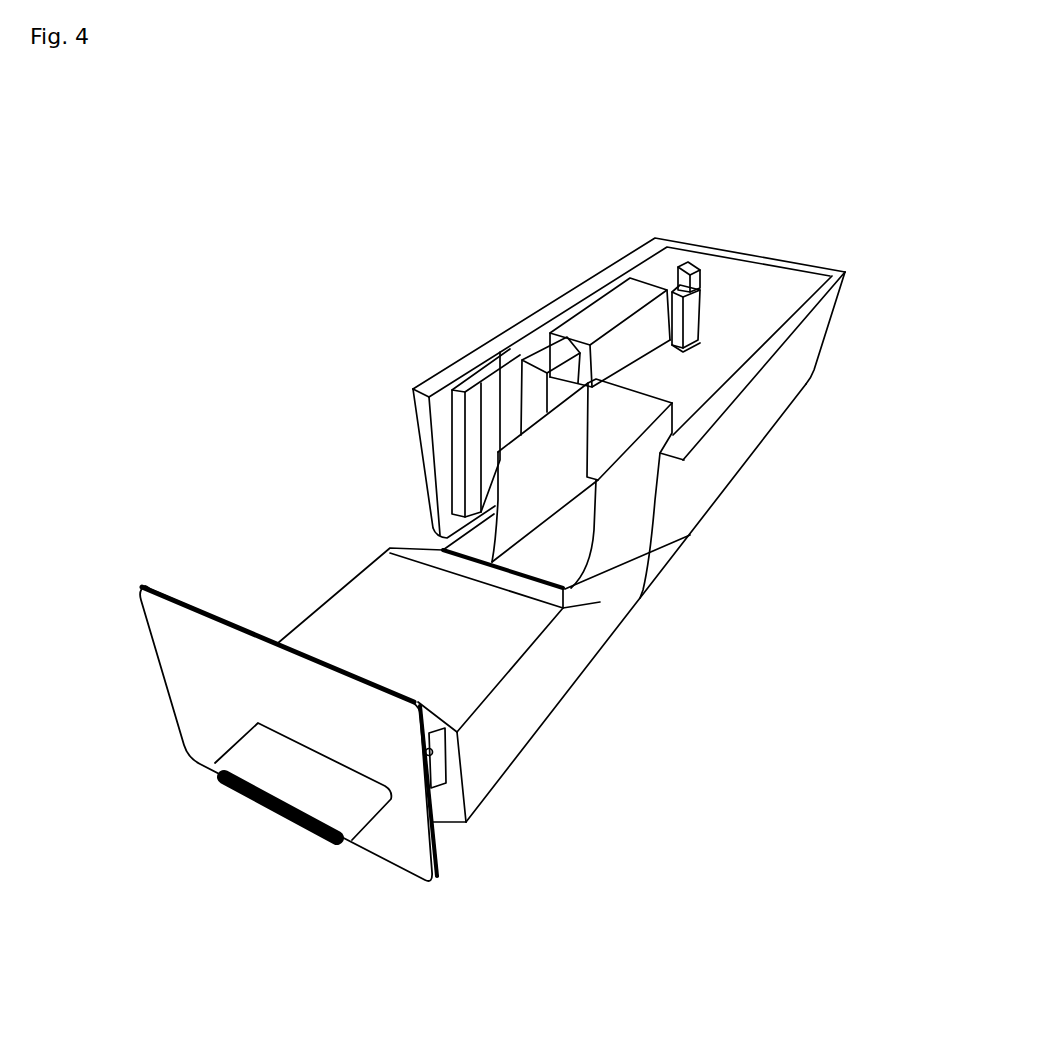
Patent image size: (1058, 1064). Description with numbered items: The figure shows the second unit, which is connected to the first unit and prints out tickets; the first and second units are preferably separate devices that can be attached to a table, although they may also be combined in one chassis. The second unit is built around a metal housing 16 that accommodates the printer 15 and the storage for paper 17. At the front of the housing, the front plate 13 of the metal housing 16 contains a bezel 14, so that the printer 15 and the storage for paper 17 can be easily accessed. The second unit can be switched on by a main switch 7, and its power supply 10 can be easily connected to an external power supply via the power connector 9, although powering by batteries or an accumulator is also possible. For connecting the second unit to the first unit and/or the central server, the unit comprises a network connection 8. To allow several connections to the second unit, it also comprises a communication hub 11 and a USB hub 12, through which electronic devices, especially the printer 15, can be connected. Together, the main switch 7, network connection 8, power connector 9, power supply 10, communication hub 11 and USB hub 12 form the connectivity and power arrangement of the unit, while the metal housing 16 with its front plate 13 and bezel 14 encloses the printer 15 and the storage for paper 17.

The main switch 7 is at (690, 352).
The network connection 8 is at (690, 275).
The power connector 9 is at (698, 323).
The power supply 10 is at (615, 293).
The communication hub 11 is at (538, 350).
The USB hub 12 is at (455, 412).
The front plate 13 is at (185, 592).
The bezel 14 is at (252, 805).
The printer 15 is at (513, 732).
The metal housing 16 is at (672, 574).
The storage for paper 17 is at (632, 480).